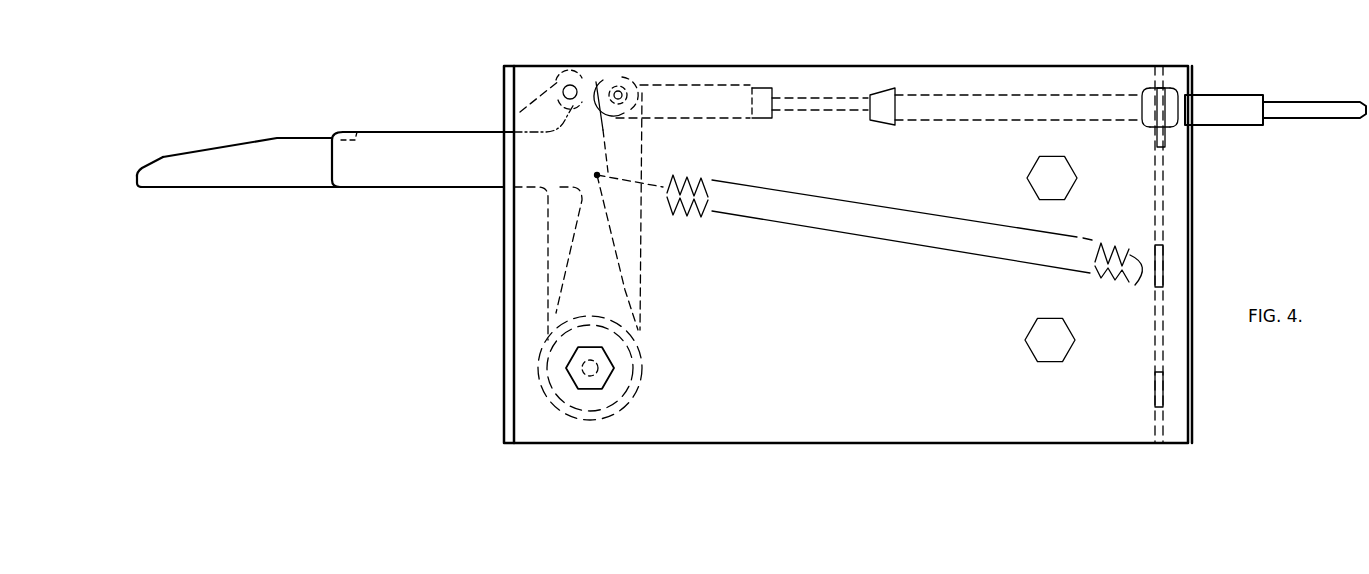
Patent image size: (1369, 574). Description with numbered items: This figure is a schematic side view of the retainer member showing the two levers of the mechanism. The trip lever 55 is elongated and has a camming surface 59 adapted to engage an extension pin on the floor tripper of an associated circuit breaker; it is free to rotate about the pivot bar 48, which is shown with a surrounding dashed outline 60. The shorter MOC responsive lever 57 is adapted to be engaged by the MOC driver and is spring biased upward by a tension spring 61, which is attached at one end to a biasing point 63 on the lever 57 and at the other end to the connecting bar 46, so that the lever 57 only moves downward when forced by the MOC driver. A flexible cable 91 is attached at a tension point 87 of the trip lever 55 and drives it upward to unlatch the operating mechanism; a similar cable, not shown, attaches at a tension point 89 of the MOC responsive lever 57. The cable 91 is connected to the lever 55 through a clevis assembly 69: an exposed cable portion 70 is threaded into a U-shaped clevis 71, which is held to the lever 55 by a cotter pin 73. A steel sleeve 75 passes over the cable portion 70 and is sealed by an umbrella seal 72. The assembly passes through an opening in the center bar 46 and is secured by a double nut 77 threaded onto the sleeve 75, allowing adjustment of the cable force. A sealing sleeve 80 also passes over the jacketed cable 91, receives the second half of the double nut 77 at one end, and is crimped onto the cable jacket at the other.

The connecting bar 46 is at (1158, 142).
The pivot bar 48 is at (607, 352).
The trip lever 55 is at (230, 142).
The MOC responsive lever 57 is at (347, 130).
The camming surface 59 is at (160, 158).
The pulley 60 is at (643, 370).
The spring 61 is at (913, 210).
The biasing point 63 is at (600, 174).
The clevis assembly 69 is at (795, 90).
The exposed cable portion 70 is at (837, 97).
The U-shaped clevis 71 is at (712, 72).
The umbrella seal 72 is at (897, 90).
The cotter pin 73 is at (640, 82).
The steel sleeve 75 is at (1033, 95).
The double nut 77 is at (1157, 66).
The sealing sleeve 80 is at (1222, 105).
The tension point 87 is at (622, 78).
The tension point 89 is at (572, 84).
The flexible cable 91 is at (1314, 95).